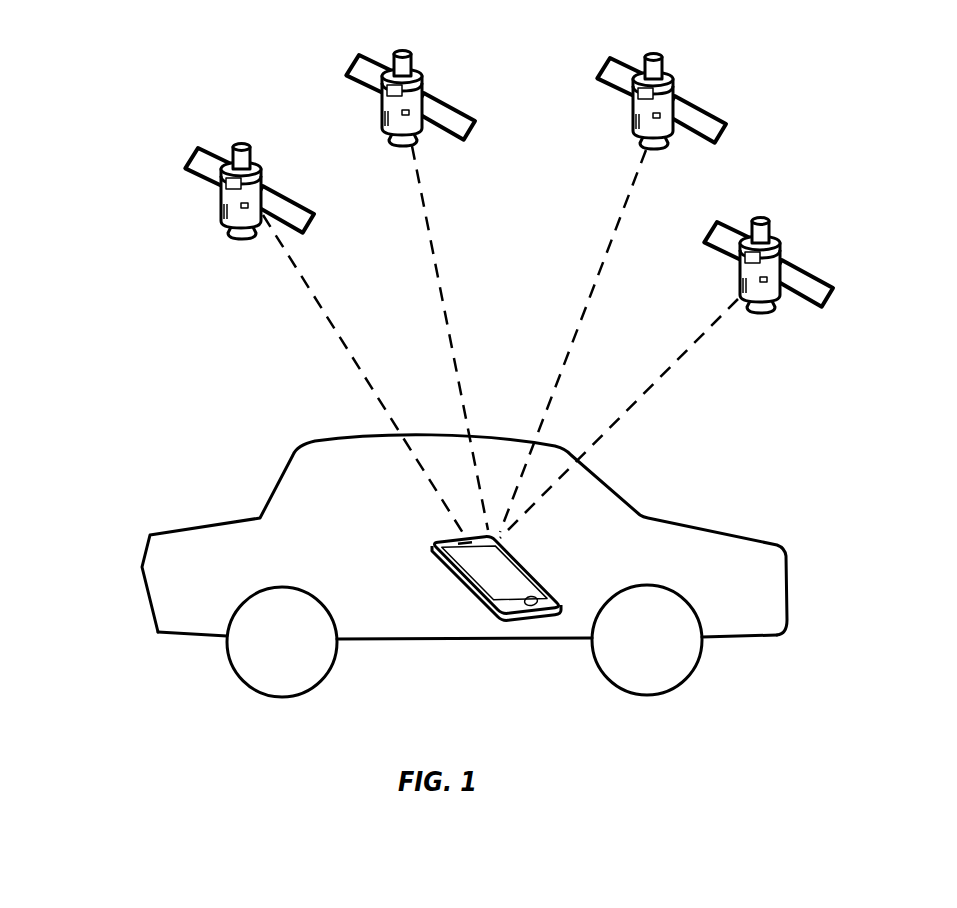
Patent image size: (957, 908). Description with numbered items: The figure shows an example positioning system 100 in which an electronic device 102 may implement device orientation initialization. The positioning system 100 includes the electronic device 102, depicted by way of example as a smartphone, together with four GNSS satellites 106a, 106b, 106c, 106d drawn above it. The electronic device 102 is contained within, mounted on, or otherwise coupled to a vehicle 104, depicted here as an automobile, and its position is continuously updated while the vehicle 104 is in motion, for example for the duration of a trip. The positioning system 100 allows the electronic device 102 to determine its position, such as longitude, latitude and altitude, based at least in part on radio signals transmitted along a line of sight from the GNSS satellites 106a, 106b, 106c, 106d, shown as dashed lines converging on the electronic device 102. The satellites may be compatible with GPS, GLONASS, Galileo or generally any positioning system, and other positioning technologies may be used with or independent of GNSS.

The positioning system 100 is at (87, 186).
The electronic device 102 is at (540, 617).
The vehicle 104 is at (280, 478).
The GNSS satellite 106a is at (271, 192).
The GNSS satellite 106b is at (432, 99).
The GNSS satellite 106c is at (683, 102).
The GNSS satellite 106d is at (790, 266).